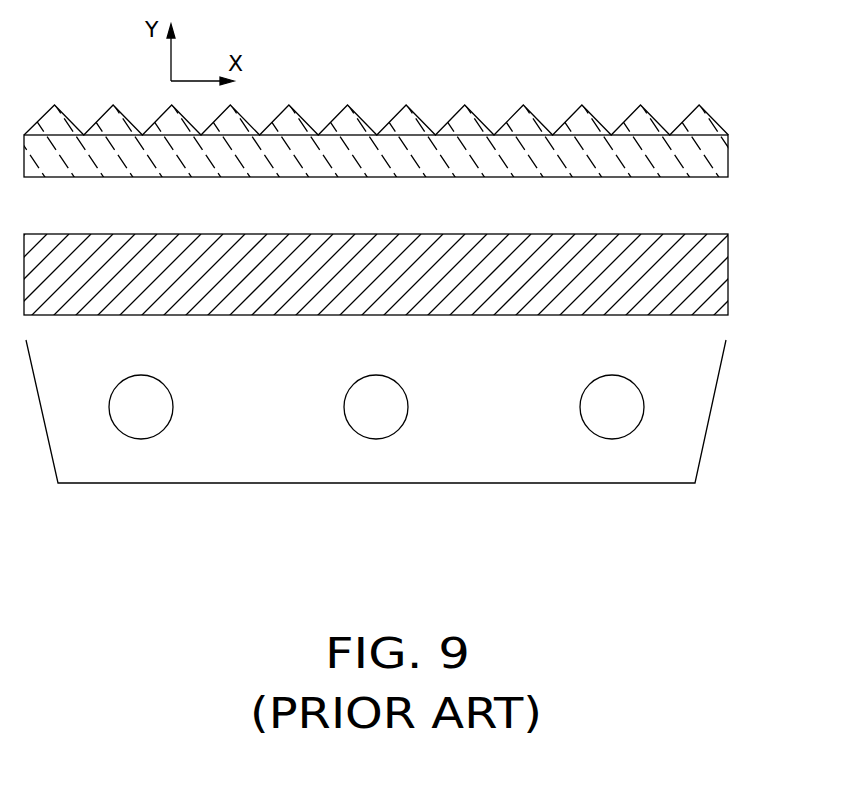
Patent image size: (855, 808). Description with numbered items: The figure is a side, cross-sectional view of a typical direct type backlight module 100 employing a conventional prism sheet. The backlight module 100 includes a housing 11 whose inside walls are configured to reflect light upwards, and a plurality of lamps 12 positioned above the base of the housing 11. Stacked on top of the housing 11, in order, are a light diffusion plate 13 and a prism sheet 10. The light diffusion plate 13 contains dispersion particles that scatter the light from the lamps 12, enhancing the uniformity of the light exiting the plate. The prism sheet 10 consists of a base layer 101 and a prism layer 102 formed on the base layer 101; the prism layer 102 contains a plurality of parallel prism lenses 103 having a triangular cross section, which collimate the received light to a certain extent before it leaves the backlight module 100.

The backlight module 100 is at (504, 76).
The prism sheet 10 is at (411, 140).
The base layer 101 is at (663, 163).
The prism layer 102 is at (707, 115).
The prism lenses 103 is at (596, 112).
The light diffusion plate 13 is at (717, 278).
The housing 11 is at (717, 392).
The lamps 12 is at (619, 425).